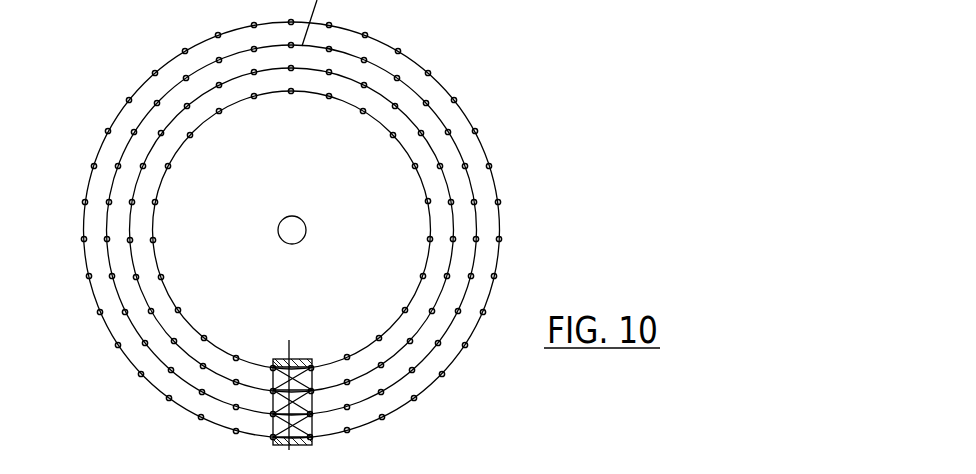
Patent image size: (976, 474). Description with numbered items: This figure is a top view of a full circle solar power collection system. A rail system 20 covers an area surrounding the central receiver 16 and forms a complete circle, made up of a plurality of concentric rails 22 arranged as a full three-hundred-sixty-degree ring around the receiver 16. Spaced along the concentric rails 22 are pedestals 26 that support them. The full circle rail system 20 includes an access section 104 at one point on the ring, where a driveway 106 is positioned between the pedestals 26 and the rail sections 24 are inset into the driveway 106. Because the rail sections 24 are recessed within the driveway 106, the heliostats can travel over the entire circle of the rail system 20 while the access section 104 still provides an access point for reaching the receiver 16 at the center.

The receiver 16 is at (305, 224).
The rail system 20 is at (289, 220).
The concentric rails 22 is at (177, 153).
The rail sections 24 is at (453, 228).
The pedestals 26 is at (185, 51).
The access section 104 is at (298, 348).
The driveway 106 is at (308, 427).